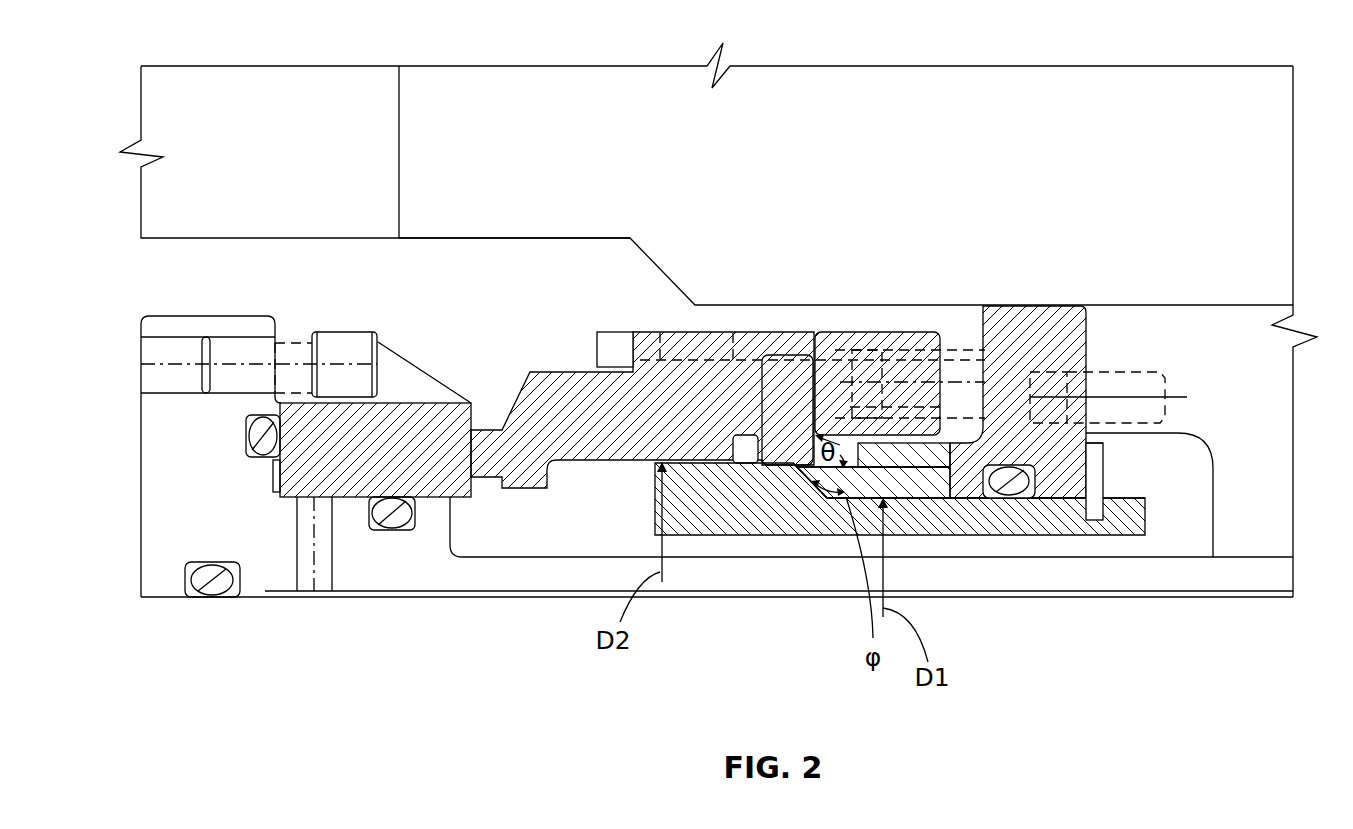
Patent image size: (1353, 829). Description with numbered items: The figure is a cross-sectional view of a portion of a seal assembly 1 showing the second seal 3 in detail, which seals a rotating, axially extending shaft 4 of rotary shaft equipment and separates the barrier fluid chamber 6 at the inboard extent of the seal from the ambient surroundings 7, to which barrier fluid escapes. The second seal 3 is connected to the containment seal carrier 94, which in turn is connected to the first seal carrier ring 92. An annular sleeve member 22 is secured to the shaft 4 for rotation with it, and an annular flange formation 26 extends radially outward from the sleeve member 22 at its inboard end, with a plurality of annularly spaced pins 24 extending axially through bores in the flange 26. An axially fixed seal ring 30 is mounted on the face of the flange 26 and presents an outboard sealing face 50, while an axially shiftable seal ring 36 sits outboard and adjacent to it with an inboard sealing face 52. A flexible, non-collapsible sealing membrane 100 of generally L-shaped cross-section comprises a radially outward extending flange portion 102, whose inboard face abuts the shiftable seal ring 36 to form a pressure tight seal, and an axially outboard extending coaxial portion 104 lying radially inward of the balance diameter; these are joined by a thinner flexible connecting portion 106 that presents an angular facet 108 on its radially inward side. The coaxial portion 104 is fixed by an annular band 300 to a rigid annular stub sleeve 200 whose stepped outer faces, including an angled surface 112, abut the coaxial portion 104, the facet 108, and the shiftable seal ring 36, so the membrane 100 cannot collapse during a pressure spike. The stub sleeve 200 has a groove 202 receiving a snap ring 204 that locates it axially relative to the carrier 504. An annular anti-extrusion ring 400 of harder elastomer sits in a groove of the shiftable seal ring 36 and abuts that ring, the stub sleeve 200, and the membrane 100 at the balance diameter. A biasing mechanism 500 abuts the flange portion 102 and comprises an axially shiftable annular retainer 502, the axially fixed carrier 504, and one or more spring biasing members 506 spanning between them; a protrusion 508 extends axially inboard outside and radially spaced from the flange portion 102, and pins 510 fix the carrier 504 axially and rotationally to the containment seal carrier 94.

The seal assembly 1 is at (191, 287).
The second seal 3 is at (407, 644).
The shaft 4 is at (503, 701).
The barrier fluid chamber 6 is at (303, 294).
The ambient surroundings 7 is at (1331, 404).
The annular sleeve member 22 is at (374, 567).
The pins 24 is at (217, 386).
The annular flange formation 26 is at (197, 494).
The axially fixed seal ring 30 is at (403, 410).
The axially shiftable seal ring 36 is at (592, 450).
The outboard sealing face 50 is at (463, 470).
The inboard sealing face 52 is at (478, 443).
The first seal carrier ring 92 is at (252, 171).
The containment seal carrier 94 is at (469, 157).
The sealing membrane 100 is at (752, 335).
The flange portion 102 is at (770, 414).
The coaxial portion 104 is at (912, 497).
The flexible connecting portion 106 is at (790, 495).
The angular facet 108 is at (741, 542).
The angled surface 112 is at (745, 465).
The stub sleeve 200 is at (1020, 522).
The groove 202 is at (1098, 522).
The snap ring 204 is at (1104, 462).
The annular band 300 is at (943, 497).
The annular anti-extrusion ring 400 is at (735, 482).
The biasing mechanism 500 is at (1013, 220).
The axially shiftable annular retainer 502 is at (835, 343).
The axially fixed carrier 504 is at (1065, 306).
The biasing members 506 is at (968, 368).
The protrusion 508 is at (800, 332).
The pins 510 is at (1130, 383).